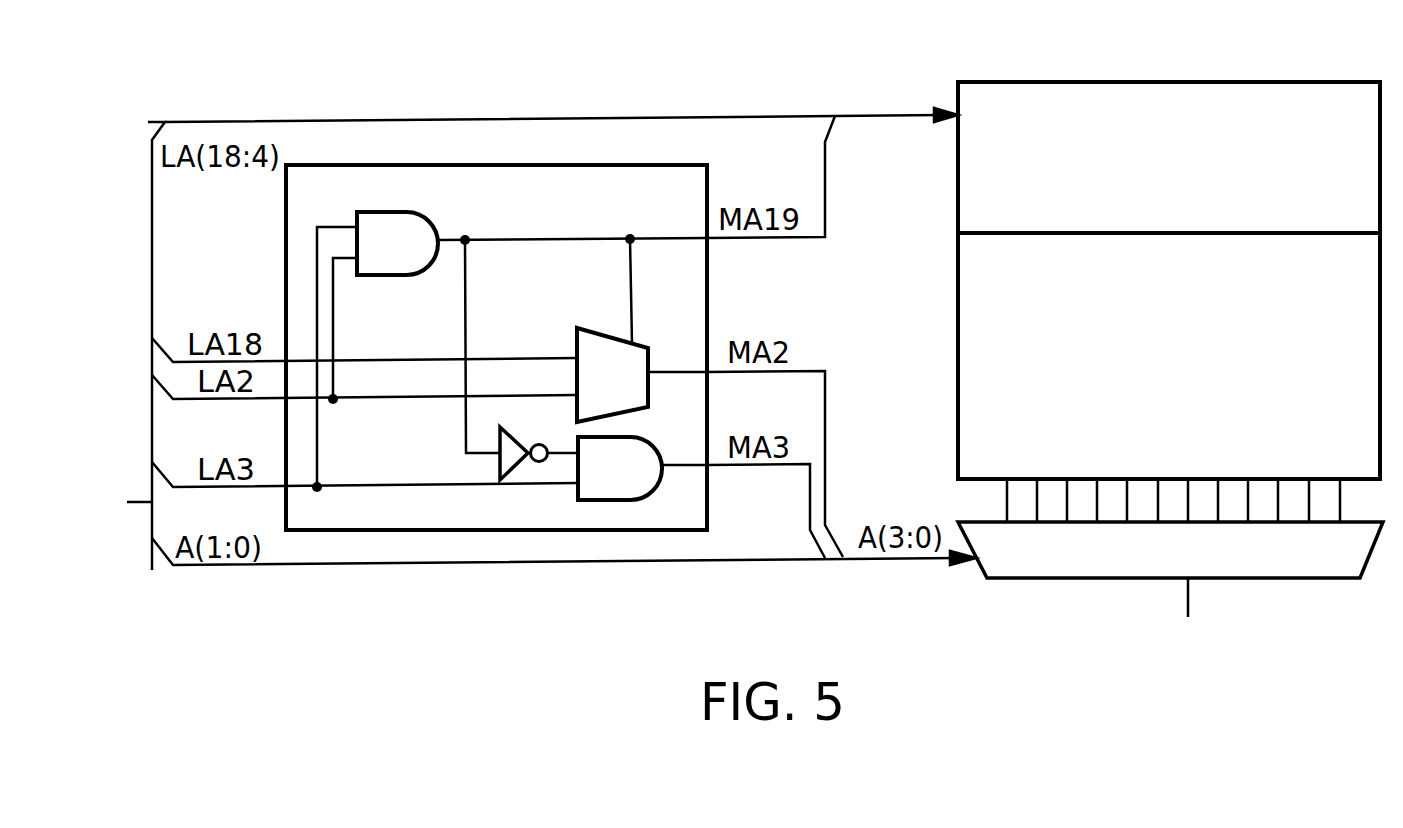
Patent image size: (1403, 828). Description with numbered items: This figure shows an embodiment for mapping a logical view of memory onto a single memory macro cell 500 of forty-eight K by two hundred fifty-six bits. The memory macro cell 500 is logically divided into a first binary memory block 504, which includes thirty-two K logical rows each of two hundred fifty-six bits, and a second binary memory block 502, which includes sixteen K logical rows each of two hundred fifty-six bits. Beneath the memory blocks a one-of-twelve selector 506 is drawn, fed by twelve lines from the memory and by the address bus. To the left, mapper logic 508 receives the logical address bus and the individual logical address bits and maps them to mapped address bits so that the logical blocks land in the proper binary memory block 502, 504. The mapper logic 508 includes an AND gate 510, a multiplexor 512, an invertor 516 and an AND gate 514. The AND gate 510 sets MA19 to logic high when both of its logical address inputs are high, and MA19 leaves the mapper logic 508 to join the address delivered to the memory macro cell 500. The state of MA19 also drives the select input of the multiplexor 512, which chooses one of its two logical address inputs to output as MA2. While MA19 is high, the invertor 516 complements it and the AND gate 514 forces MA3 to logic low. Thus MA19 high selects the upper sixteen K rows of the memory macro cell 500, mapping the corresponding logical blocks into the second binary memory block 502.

The memory macro cell 500 is at (990, 82).
The second binary memory block 502 is at (1217, 167).
The first binary memory block 504 is at (1217, 350).
The 1 of 12 selector 506 is at (1047, 566).
The mapper logic 508 is at (600, 213).
The AND gate 510 is at (415, 260).
The multiplexor 512 is at (637, 393).
The AND gate 514 is at (637, 486).
The invertor 516 is at (500, 435).